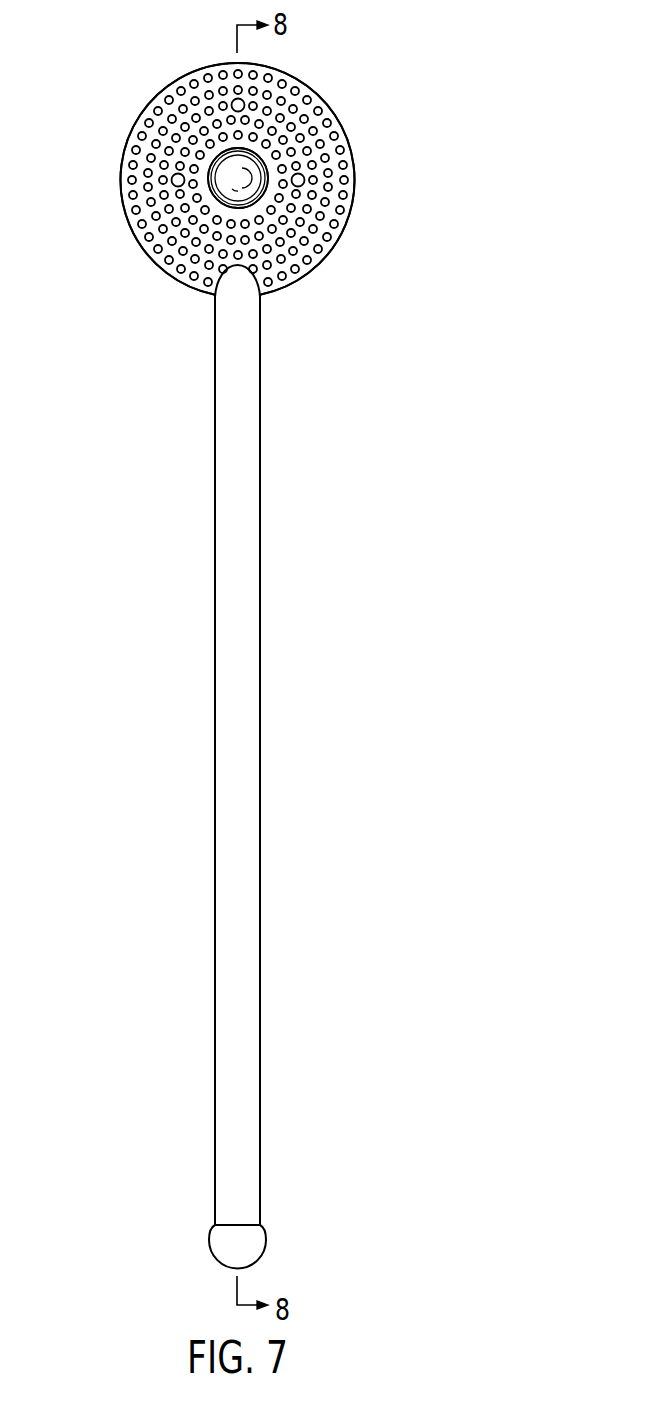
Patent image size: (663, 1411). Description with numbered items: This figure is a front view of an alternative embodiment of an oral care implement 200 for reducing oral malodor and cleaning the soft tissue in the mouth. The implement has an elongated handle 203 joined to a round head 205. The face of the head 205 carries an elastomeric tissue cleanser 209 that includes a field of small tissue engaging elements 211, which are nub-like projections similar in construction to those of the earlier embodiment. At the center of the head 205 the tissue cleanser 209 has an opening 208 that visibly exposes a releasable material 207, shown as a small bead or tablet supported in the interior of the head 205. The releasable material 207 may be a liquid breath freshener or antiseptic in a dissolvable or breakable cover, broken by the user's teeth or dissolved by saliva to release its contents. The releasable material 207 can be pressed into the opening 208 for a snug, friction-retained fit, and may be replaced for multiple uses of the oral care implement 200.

The oral care implement 200 is at (428, 74).
The handle 203 is at (262, 781).
The head 205 is at (155, 66).
The releasable material 207 is at (240, 178).
The opening 208 is at (218, 200).
The tissue cleanser 209 is at (343, 225).
The tissue engaging elements 211 is at (297, 85).